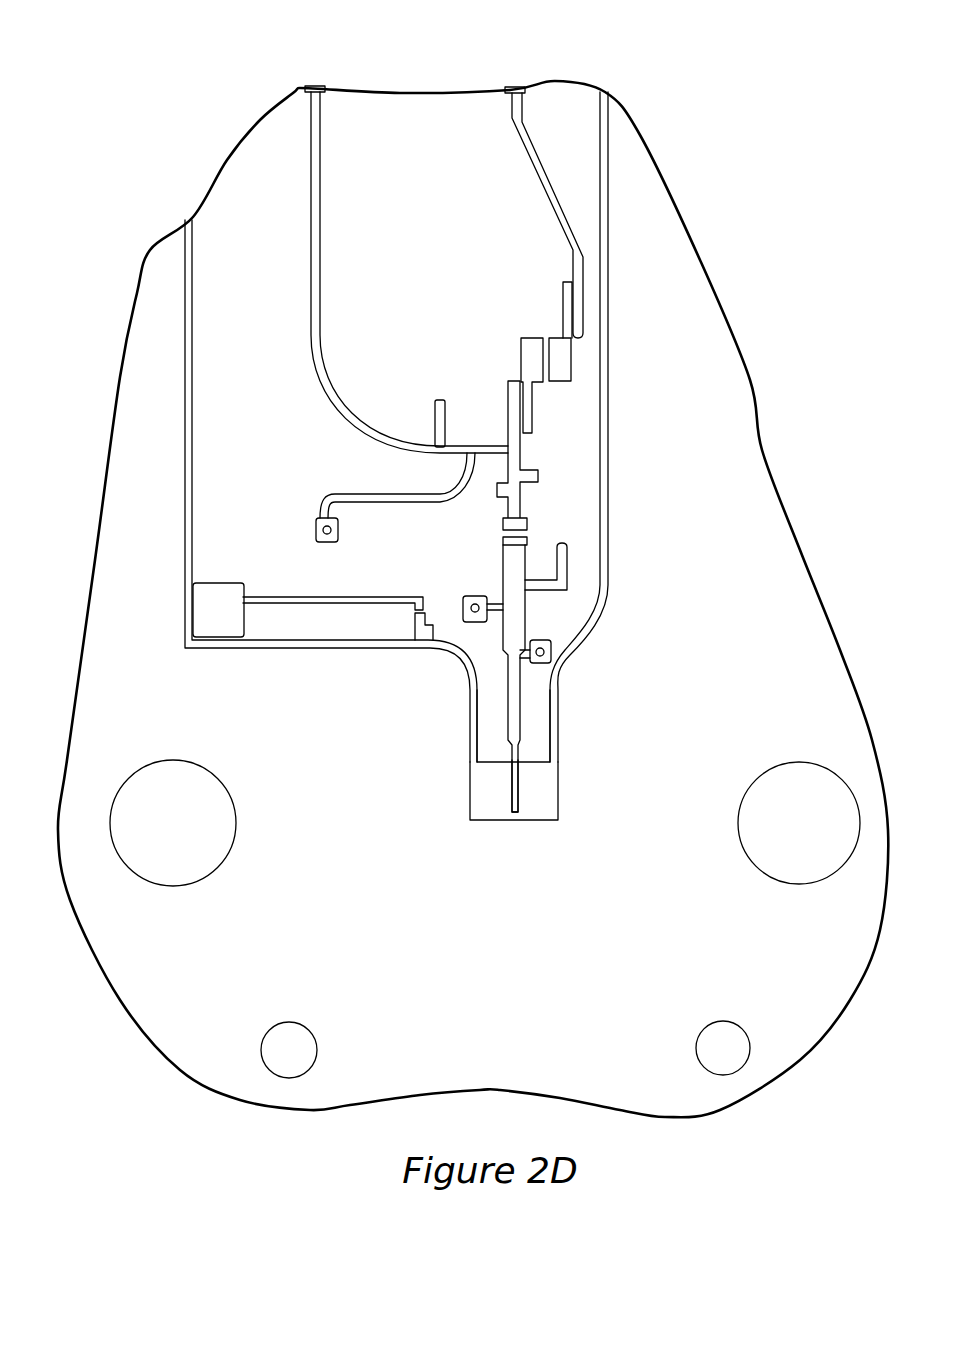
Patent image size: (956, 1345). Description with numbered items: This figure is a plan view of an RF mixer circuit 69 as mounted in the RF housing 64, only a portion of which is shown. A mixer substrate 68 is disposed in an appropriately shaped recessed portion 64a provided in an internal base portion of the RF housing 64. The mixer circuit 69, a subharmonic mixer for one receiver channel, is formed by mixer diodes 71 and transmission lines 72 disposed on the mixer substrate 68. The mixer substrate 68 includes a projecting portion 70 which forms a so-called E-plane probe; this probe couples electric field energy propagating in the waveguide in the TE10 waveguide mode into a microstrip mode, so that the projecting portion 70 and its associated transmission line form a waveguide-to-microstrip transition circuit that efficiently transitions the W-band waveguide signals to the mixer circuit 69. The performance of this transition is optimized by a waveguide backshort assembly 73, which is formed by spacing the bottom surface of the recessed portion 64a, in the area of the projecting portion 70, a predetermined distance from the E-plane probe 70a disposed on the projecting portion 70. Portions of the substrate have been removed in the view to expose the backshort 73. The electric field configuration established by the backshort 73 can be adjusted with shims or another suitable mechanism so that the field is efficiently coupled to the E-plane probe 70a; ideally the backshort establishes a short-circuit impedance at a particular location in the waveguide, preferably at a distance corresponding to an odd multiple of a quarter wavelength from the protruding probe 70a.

The mixer circuit 69 is at (473, 567).
The RF housing 64 is at (745, 345).
The recessed portion 64a is at (608, 480).
The mixer substrate 68 is at (270, 430).
The projecting portion 70 is at (560, 748).
The E-plane probe 70a is at (514, 820).
The mixer diodes 71 is at (498, 535).
The transmission lines 72 is at (451, 341).
The waveguide backshort assembly 73 is at (545, 800).